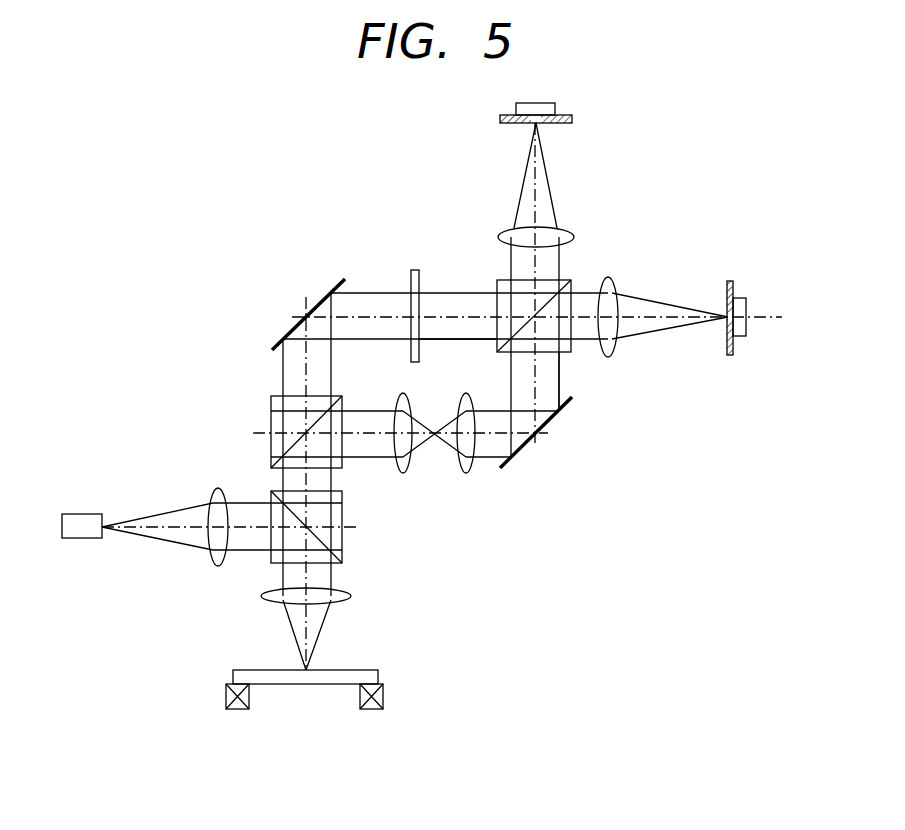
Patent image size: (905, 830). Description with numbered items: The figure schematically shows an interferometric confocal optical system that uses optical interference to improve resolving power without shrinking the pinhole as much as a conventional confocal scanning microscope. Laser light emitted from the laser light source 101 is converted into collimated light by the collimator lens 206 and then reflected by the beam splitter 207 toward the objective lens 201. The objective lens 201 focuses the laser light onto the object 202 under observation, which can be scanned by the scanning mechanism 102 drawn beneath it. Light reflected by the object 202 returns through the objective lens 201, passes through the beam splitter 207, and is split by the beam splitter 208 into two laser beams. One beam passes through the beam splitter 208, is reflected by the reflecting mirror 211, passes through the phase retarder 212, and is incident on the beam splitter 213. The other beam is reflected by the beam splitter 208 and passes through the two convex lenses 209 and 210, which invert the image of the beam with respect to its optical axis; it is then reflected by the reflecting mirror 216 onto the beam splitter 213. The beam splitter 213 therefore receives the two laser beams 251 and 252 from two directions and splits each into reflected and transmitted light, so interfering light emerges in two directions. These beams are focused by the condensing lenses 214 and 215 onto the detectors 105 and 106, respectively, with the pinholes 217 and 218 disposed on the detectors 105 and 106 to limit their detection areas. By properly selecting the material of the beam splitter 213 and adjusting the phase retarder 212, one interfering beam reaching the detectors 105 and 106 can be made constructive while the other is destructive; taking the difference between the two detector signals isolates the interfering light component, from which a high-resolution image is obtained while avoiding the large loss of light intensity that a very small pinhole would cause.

The laser light source 101 is at (87, 514).
The scanning mechanism 102 is at (384, 695).
The detector 105 is at (555, 107).
The detector 106 is at (745, 298).
The objective lens 201 is at (268, 604).
The object under observation 202 is at (365, 670).
The collimator lens 206 is at (213, 490).
The beam splitter 207 is at (343, 547).
The beam splitter 208 is at (270, 409).
The convex lens 209 is at (403, 474).
The convex lens 210 is at (466, 474).
The reflecting mirror 211 is at (290, 332).
The phase retarder 212 is at (413, 270).
The beam splitter 213 is at (497, 282).
The condensing lens 214 is at (500, 237).
The condensing lens 215 is at (612, 278).
The reflecting mirror 216 is at (548, 433).
The pinhole 217 is at (500, 118).
The pinhole 218 is at (727, 282).
The laser beam 251 is at (563, 378).
The laser beam 252 is at (445, 345).